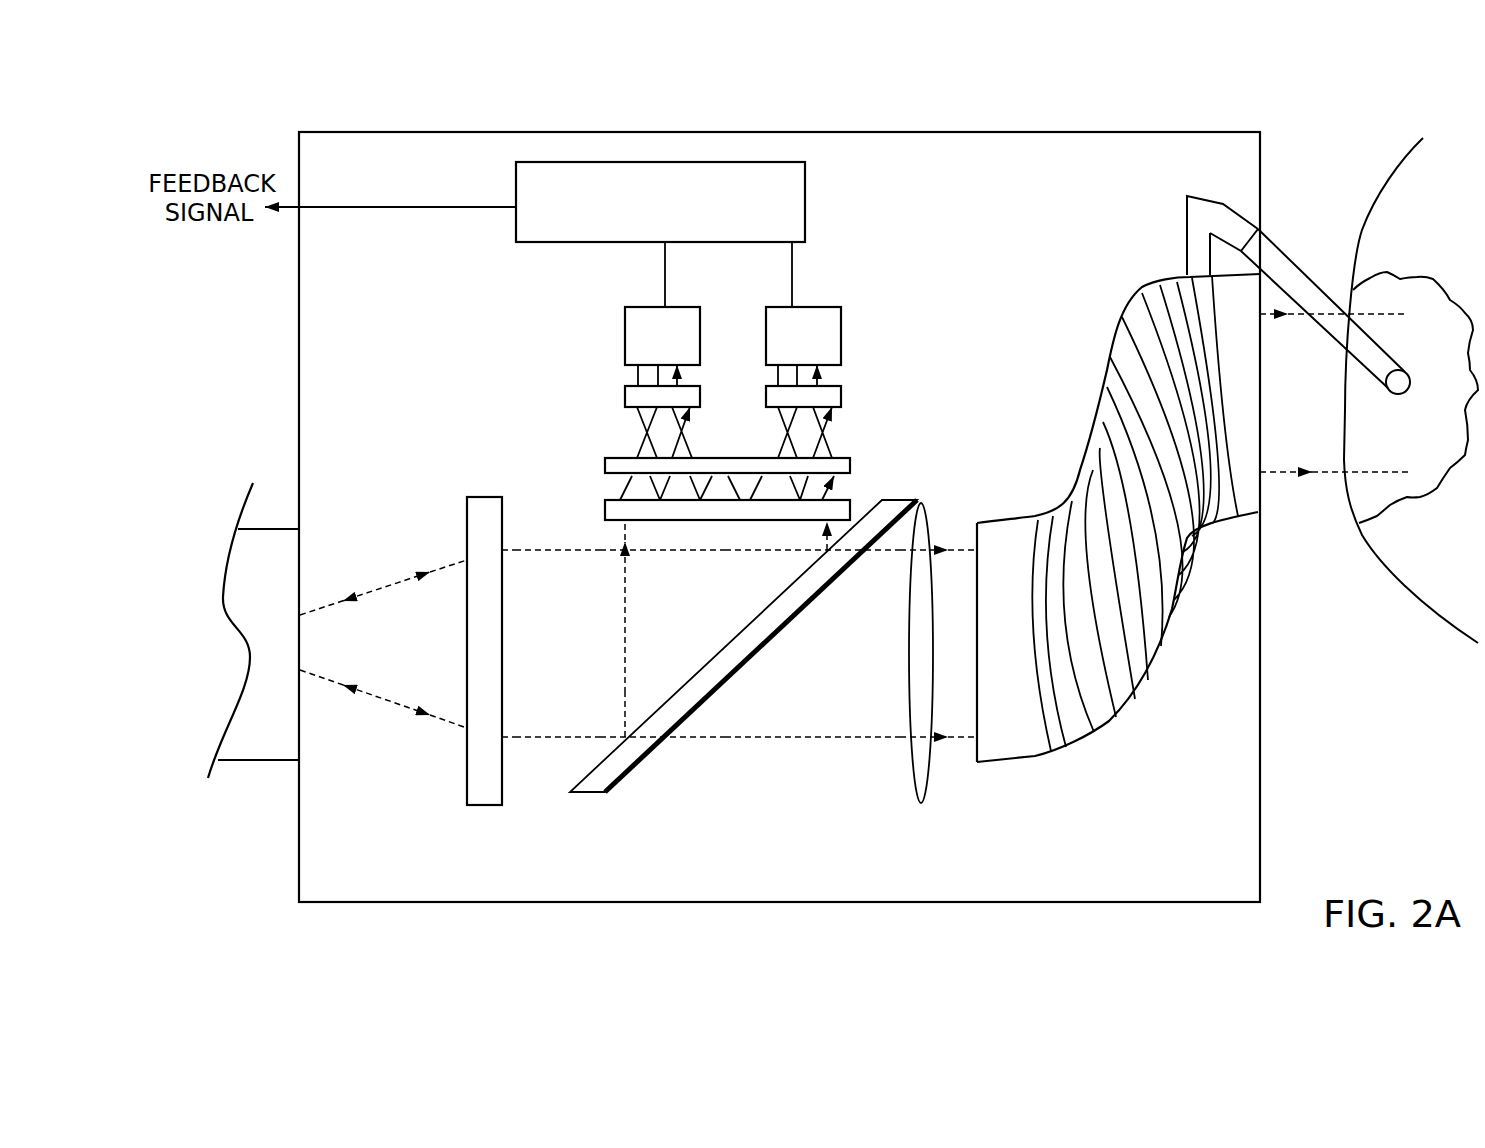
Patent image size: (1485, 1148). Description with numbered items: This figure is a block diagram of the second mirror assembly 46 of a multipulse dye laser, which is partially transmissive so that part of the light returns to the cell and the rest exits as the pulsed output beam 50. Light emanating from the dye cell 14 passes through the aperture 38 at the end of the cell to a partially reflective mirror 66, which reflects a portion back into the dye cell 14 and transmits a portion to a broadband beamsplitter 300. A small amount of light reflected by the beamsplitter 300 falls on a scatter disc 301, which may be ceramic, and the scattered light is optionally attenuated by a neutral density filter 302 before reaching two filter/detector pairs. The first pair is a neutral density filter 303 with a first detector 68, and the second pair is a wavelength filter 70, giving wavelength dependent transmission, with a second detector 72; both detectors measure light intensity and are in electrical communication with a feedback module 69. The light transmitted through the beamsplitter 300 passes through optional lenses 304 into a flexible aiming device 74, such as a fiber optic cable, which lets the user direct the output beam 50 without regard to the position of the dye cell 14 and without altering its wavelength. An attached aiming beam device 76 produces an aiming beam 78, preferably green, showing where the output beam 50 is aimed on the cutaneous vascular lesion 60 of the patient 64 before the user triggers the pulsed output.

The dye cell 14 is at (250, 746).
The aperture 38 is at (297, 762).
The second mirror assembly 46 is at (1262, 767).
The output beam 50 is at (1318, 476).
The cutaneous vascular lesion 60 is at (1453, 300).
The patient 64 is at (1386, 172).
The partially reflective mirror 66 is at (471, 781).
The first detector 68 is at (790, 348).
The feedback module 69 is at (737, 214).
The wavelength filter 70 is at (623, 397).
The second detector 72 is at (649, 348).
The flexible aiming device 74 is at (1025, 762).
The aiming beam device 76 is at (1205, 196).
The aiming beam 78 is at (1297, 265).
The broadband beamsplitter 300 is at (590, 793).
The scatter disc 301 is at (605, 510).
The neutral density filter 302 is at (850, 465).
The neutral density filter 303 is at (843, 397).
The lenses 304 is at (922, 803).